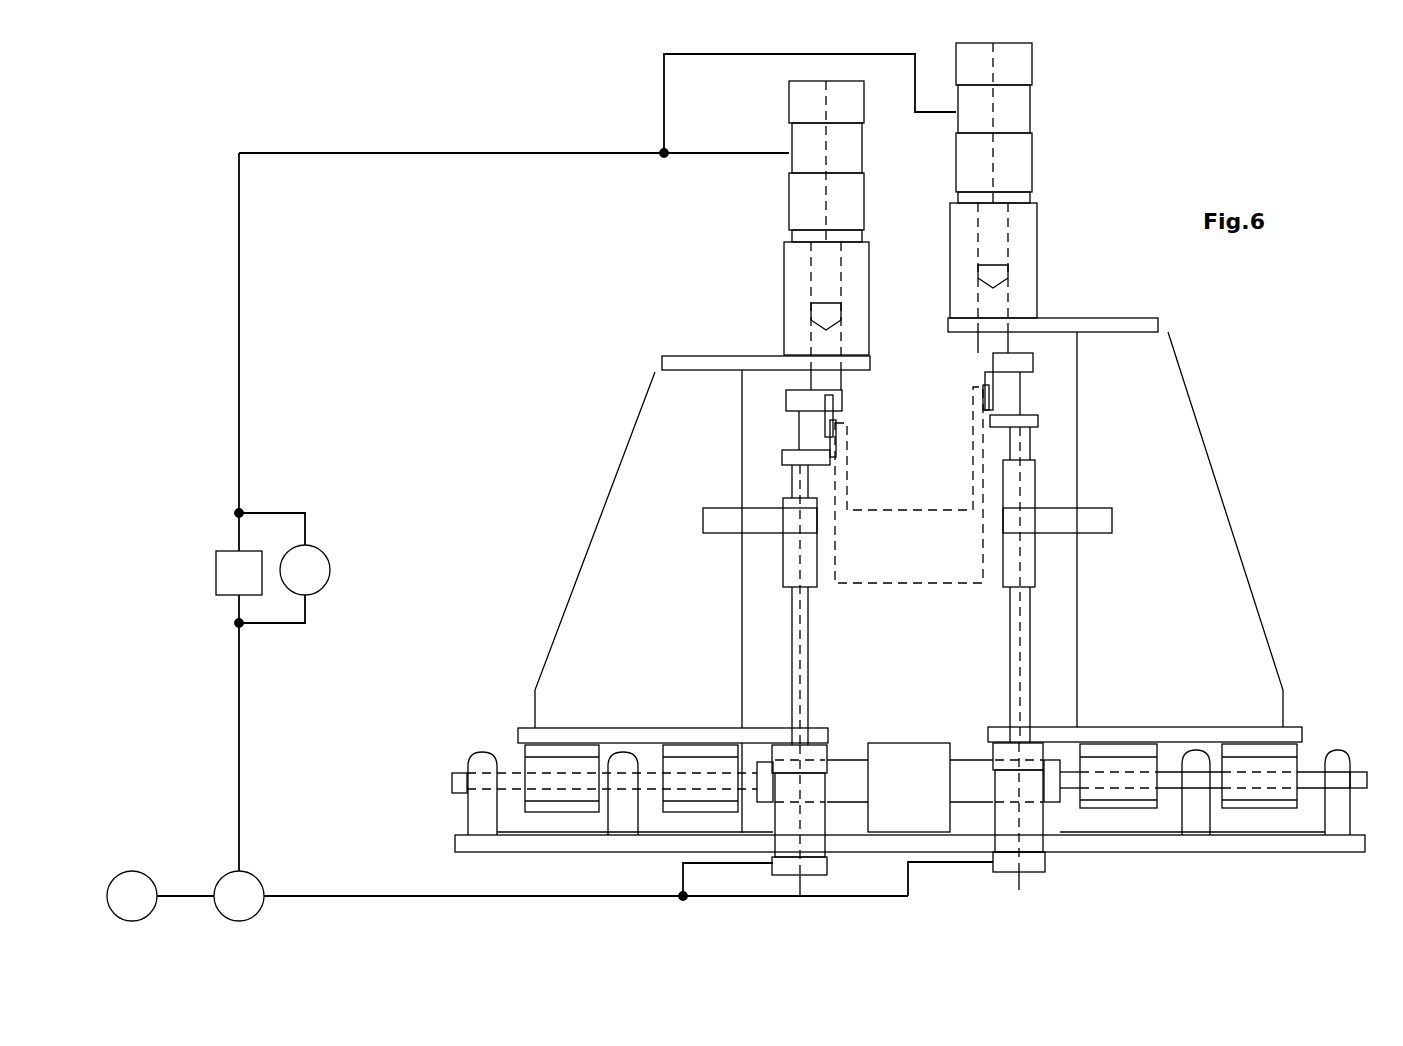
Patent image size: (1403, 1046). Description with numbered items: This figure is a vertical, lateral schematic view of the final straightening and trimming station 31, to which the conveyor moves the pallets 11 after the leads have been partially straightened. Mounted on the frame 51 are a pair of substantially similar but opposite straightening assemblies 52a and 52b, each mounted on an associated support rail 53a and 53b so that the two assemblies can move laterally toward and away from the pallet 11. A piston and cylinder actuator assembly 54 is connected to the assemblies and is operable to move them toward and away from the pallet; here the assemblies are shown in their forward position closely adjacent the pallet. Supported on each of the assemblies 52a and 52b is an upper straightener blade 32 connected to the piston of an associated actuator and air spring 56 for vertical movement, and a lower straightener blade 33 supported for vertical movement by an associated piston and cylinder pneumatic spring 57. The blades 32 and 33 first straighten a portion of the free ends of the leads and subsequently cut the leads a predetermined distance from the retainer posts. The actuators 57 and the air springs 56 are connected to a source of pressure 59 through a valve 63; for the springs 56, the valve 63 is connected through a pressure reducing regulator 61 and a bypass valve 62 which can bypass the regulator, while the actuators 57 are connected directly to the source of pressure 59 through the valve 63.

The pallet 11 is at (878, 567).
The final straightening and trimming station 31 is at (558, 586).
The upper straightening and cutting blade 32 is at (832, 405).
The lower straightening and cutting blade 33 is at (836, 445).
The frame 51 is at (1102, 838).
The straightening assembly 52a is at (582, 488).
The straightening assembly 52b is at (1251, 453).
The support rail 53a is at (508, 782).
The support rail 53b is at (1315, 775).
The piston and cylinder actuator assembly 54 is at (905, 750).
The actuator and air spring 56 is at (803, 204).
The piston and cylinder pneumatic spring 57 is at (830, 745).
The source of pressure 59 is at (135, 878).
The pressure reducing regulator 61 is at (222, 592).
The bypass valve 62 is at (330, 573).
The valve 63 is at (255, 881).